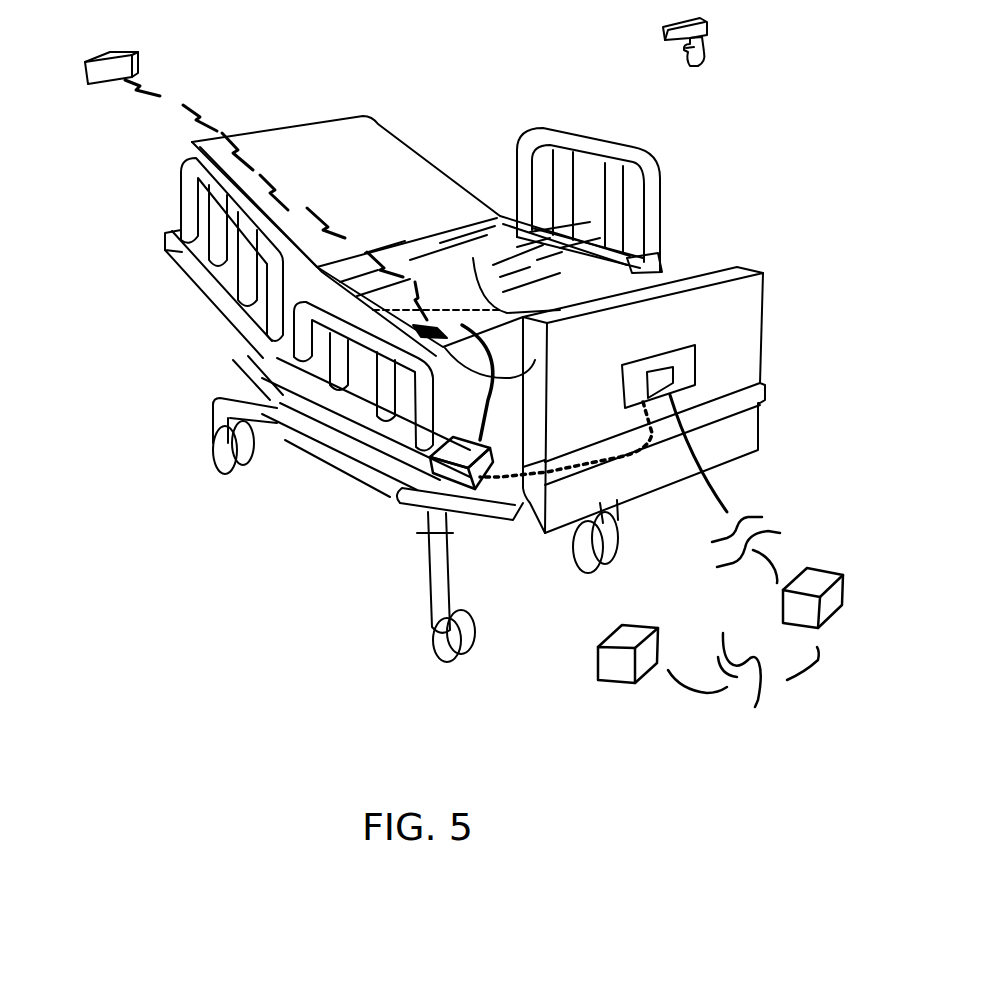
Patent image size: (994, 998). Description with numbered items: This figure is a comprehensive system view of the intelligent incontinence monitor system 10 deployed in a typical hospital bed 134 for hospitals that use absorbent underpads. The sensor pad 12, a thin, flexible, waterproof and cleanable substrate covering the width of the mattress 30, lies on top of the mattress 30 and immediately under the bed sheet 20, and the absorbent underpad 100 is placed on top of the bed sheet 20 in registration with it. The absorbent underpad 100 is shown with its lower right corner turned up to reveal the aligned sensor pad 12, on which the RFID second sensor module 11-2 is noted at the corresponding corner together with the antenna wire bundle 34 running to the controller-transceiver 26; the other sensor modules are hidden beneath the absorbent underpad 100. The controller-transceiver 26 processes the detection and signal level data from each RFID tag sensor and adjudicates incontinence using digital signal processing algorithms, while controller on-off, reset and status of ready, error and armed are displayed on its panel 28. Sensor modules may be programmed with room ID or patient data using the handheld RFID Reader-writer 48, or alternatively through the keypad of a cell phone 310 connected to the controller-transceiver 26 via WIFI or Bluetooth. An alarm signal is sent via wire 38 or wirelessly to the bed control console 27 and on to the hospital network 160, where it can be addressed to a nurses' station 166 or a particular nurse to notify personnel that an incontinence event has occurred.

The intelligent incontinence monitor system 10 is at (343, 730).
The bed sheet 20 is at (383, 143).
The cell phone 310 is at (115, 86).
The handheld RFID Reader-writer 48 is at (712, 52).
The absorbent underpad 100 is at (668, 262).
The hospital bed 134 is at (212, 267).
The mattress 30 is at (297, 290).
The second sensor module 11-2 is at (312, 440).
The sensor pad 12 is at (420, 430).
The controller-transceiver 26 is at (423, 533).
The antenna wire bundle 34 is at (488, 395).
The panel 28 is at (505, 437).
The bed control console 27 is at (700, 375).
The wire 38 is at (638, 463).
The hospital network 160 is at (777, 572).
The nurses' station 166 is at (708, 678).